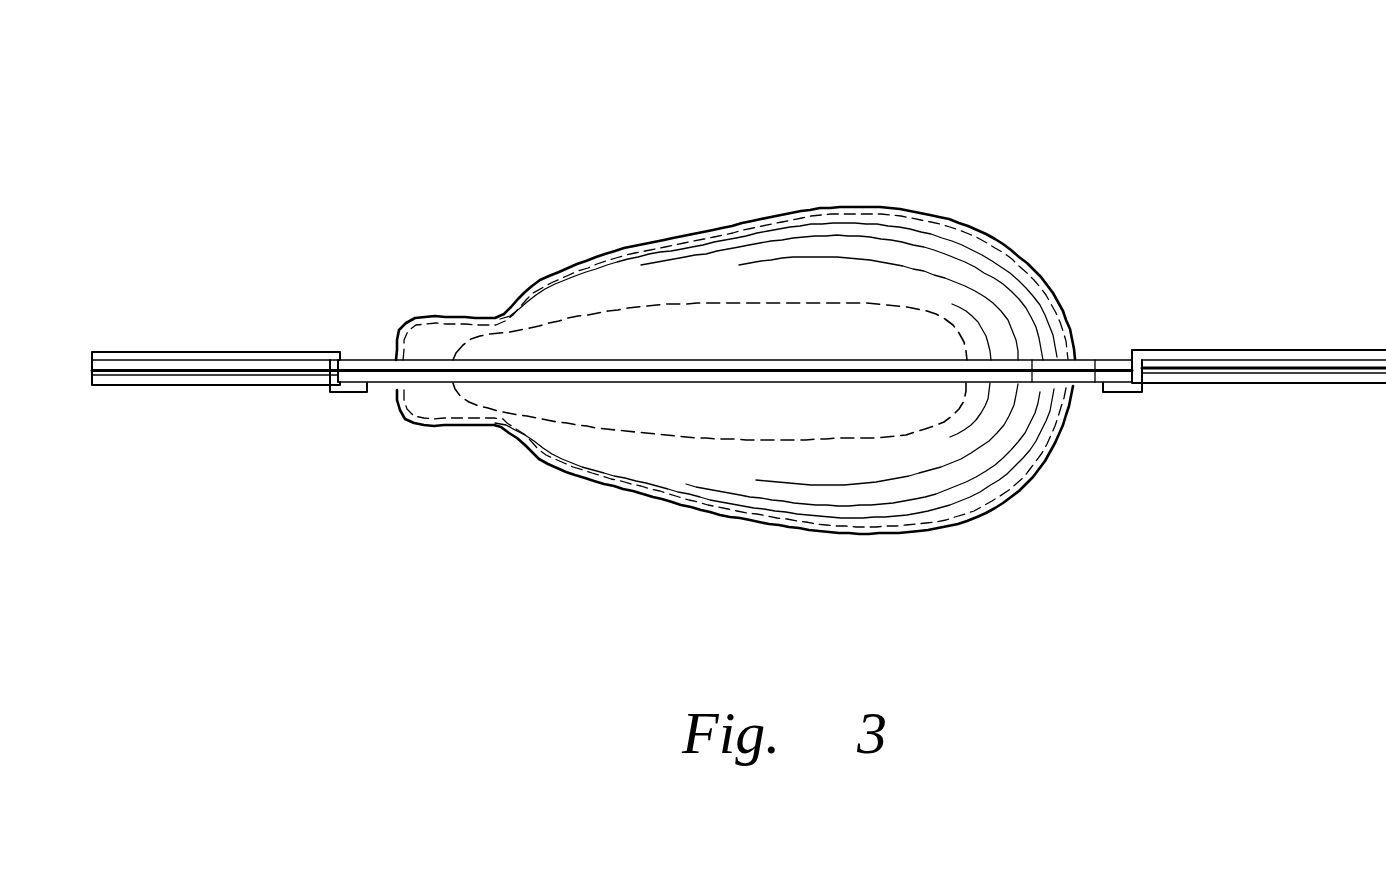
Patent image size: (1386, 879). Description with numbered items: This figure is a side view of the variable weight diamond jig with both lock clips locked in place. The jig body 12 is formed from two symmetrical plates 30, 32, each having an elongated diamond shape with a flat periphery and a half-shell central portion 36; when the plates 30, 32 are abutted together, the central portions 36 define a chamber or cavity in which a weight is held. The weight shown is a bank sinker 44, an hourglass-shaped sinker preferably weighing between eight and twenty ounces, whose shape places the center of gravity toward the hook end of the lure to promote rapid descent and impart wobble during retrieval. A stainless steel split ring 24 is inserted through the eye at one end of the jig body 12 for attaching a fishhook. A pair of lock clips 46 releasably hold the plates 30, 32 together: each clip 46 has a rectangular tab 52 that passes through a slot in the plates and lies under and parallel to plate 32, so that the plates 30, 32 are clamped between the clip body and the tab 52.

The jig body 12 is at (660, 190).
The split ring 24 is at (443, 317).
The plate 30 is at (752, 360).
The plate 32 is at (578, 383).
The half-shell central portion 36 is at (969, 222).
The bank sinker 44 is at (843, 300).
The lock clip 46 is at (213, 352).
The rectangular tab 52 is at (347, 393).